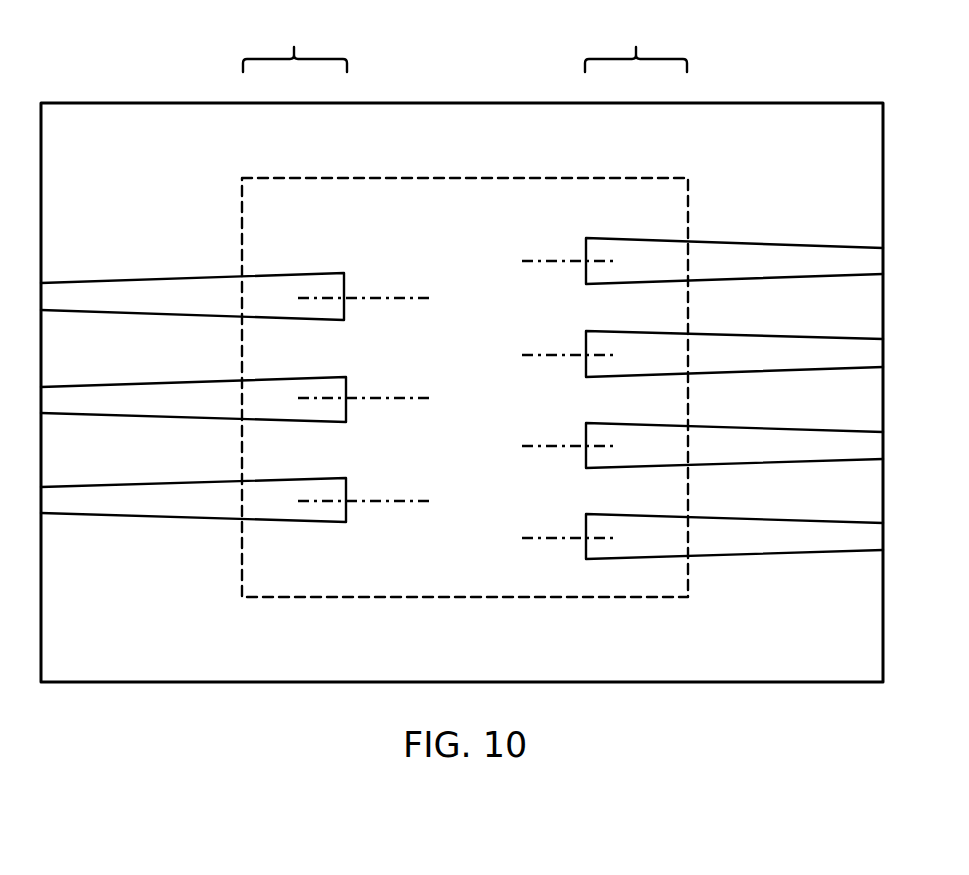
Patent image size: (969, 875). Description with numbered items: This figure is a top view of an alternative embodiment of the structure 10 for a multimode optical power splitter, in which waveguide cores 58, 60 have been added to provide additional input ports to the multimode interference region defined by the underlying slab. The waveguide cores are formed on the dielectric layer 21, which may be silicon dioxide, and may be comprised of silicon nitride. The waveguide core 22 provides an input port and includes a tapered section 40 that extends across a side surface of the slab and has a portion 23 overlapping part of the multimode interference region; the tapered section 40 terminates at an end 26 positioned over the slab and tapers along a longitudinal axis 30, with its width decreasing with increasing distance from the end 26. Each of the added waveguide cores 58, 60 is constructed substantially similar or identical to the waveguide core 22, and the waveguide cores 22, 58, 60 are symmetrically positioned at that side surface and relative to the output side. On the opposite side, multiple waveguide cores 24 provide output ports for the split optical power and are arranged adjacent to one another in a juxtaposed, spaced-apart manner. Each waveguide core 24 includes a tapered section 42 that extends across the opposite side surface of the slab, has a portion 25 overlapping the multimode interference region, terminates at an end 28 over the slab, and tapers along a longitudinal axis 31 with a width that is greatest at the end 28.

The structure 10 is at (135, 88).
The dielectric layer 21 is at (112, 648).
The waveguide core 22 is at (160, 369).
The portion 23 is at (295, 45).
The waveguide cores 24 is at (759, 229).
The portion 25 is at (636, 45).
The end 26 is at (347, 413).
The end 28 is at (585, 368).
The longitudinal axis 30 is at (387, 398).
The longitudinal axis 31 is at (527, 355).
The tapered section 40 is at (228, 405).
The tapered section 42 is at (720, 260).
The waveguide core 58 is at (159, 268).
The waveguide core 60 is at (204, 531).